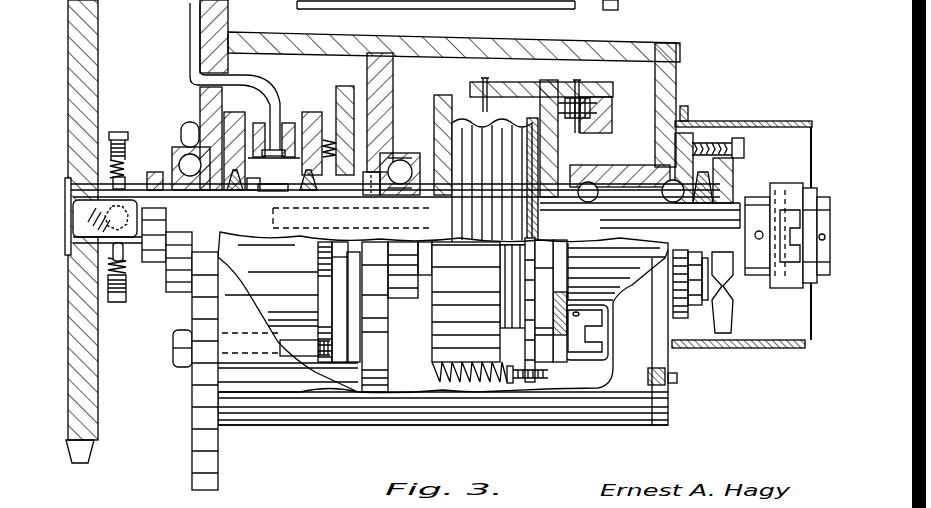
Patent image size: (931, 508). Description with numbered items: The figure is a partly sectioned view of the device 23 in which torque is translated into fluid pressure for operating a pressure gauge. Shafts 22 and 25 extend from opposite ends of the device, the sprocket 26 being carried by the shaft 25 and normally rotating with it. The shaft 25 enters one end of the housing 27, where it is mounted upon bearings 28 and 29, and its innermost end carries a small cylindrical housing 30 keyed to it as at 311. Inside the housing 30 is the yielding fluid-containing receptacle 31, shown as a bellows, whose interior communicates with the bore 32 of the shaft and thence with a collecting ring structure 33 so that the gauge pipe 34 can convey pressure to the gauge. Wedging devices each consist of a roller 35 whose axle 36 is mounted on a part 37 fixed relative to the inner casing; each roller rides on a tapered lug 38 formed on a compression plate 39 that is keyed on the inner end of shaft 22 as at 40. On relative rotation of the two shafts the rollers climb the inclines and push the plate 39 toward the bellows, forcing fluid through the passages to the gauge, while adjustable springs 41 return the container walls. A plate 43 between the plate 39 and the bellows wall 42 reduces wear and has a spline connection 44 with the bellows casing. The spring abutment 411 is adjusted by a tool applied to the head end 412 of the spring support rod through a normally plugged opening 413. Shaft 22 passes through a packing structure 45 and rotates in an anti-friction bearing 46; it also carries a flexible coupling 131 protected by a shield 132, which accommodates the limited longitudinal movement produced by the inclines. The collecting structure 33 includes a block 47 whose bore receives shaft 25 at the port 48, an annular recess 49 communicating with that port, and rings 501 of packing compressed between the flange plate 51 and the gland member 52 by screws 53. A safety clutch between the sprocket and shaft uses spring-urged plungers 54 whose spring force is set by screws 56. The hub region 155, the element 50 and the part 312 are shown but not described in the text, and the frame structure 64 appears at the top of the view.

The shaft 22 is at (736, 200).
The device 23 is at (470, 422).
The shaft 25 is at (168, 175).
The sprocket 26 is at (100, 62).
The housing 27 is at (300, 34).
The bearing 28 is at (174, 195).
The bearing 29 is at (391, 153).
The small housing 30 is at (438, 95).
The yielding fluid-containing receptacle 31 is at (470, 122).
The bore 32 is at (390, 158).
The collecting ring structure 33 is at (312, 111).
The gauge pipe 34 is at (190, 10).
The roller 35 is at (614, 106).
The axle 36 is at (589, 88).
The part 37 is at (553, 88).
The tapered lug 38 is at (562, 118).
The compression plate 39 is at (590, 164).
The keying 40 is at (560, 203).
The adjustable spring 41 is at (440, 362).
The bellows wall 42 is at (530, 180).
The plate 43 is at (530, 290).
The spline connection 44 is at (536, 85).
The packing structure 45 is at (712, 140).
The anti-friction bearing 46 is at (690, 132).
The block 47 is at (250, 191).
The port 48 is at (277, 218).
The annular recess 49 is at (268, 192).
The shaft plate 50 is at (72, 185).
The flange plate 51 is at (196, 378).
The adjustable gland member 52 is at (342, 86).
The screw 53 is at (192, 121).
The spring urged plunger 54 is at (108, 250).
The screw 56 is at (116, 130).
The frame structure 64 is at (450, 2).
The flexible coupling 131 is at (782, 165).
The shield 132 is at (760, 120).
The hub 155 is at (72, 200).
The keying 311 is at (428, 170).
The sleeve 312 is at (568, 267).
The abutment 411 is at (510, 384).
The head end 412 is at (546, 380).
The plugged opening 413 is at (665, 388).
The ring of packing material 501 is at (232, 190).